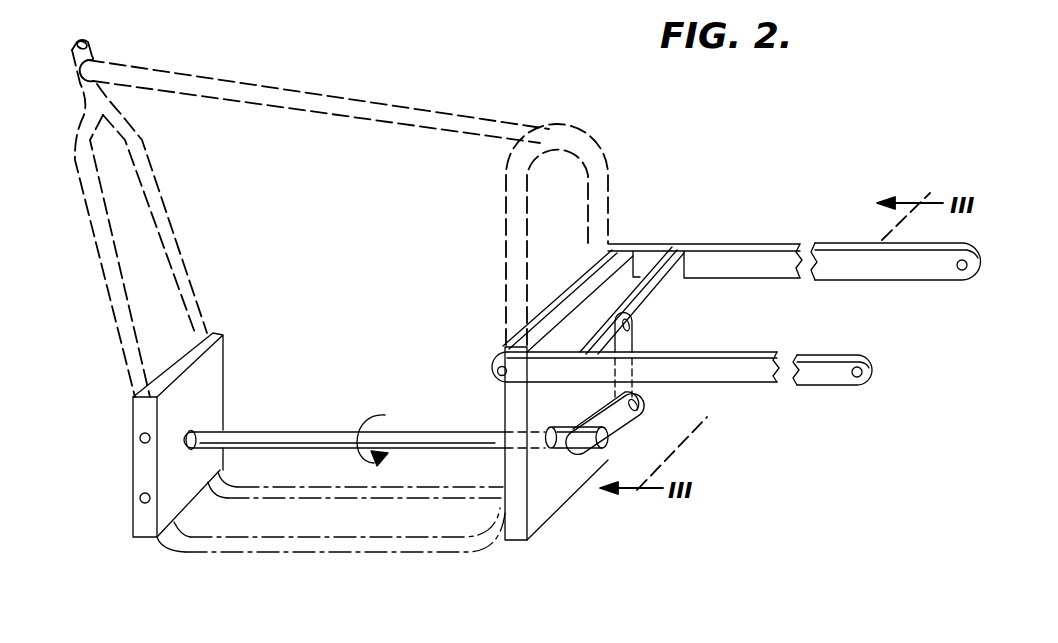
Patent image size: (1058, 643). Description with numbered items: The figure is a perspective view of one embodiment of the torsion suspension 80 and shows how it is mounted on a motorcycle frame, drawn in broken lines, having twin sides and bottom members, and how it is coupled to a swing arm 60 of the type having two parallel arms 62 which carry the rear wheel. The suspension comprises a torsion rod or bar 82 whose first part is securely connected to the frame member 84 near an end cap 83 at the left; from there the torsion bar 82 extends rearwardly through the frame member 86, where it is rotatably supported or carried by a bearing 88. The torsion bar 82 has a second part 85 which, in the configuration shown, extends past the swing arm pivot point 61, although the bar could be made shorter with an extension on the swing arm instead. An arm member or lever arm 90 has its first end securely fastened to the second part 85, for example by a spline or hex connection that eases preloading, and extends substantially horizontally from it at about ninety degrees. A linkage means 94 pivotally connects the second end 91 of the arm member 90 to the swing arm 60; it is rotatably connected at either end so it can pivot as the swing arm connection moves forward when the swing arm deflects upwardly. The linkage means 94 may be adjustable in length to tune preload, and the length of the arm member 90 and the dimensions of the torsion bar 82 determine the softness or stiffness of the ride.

The swing arm 60 is at (828, 443).
The swing arm pivot point 61 is at (493, 367).
The parallel arms 62 is at (857, 355).
The torsion suspension 80 is at (356, 597).
The torsion rod or bar 82 is at (320, 432).
The shaft end cap 83 is at (195, 432).
The frame member 84 is at (142, 486).
The second part 85 is at (592, 452).
The frame member 86 is at (517, 527).
The bearing 88 is at (561, 506).
The arm member or lever arm 90 is at (627, 422).
The second end 91 is at (637, 397).
The linkage means 94 is at (628, 340).